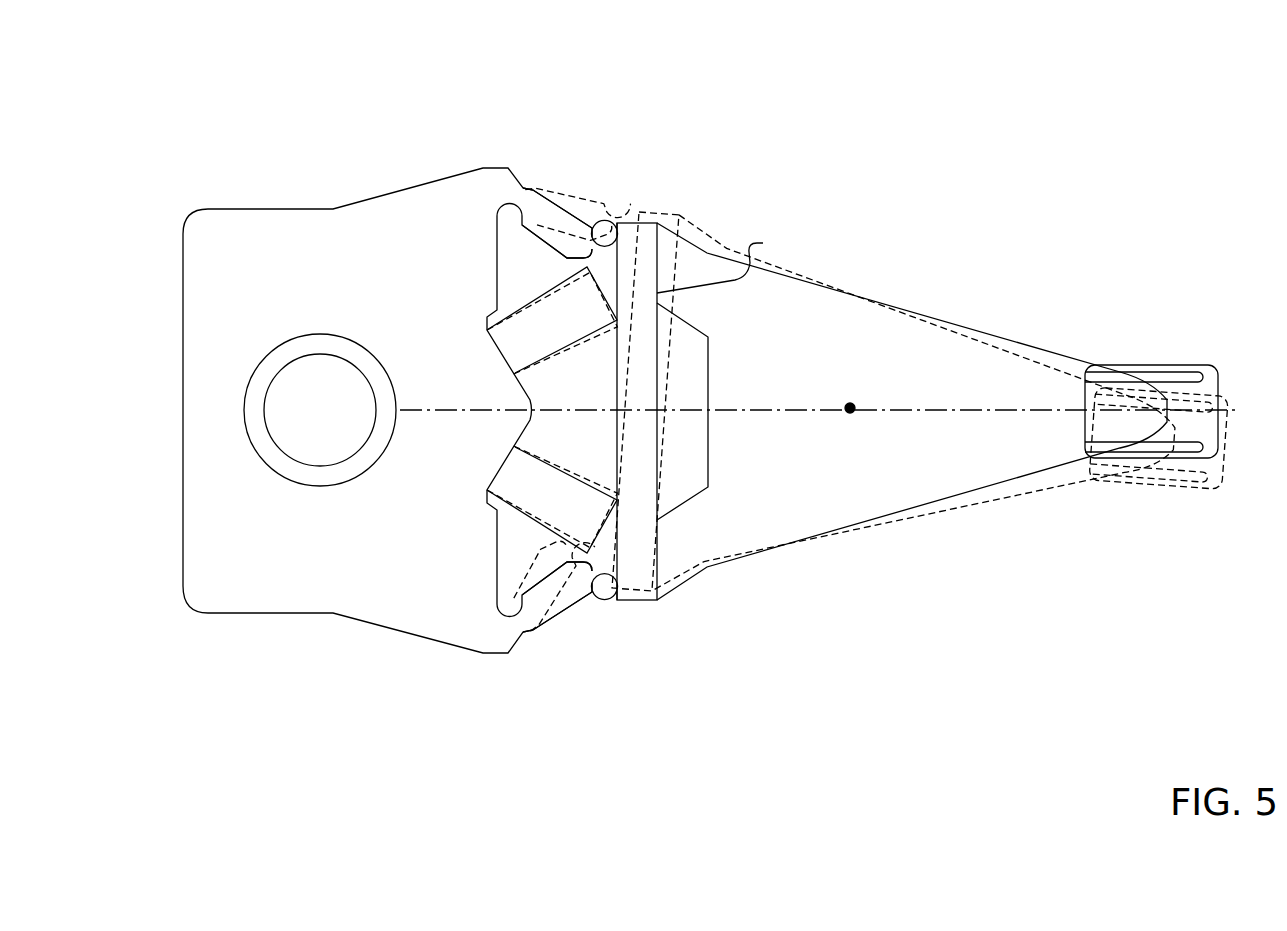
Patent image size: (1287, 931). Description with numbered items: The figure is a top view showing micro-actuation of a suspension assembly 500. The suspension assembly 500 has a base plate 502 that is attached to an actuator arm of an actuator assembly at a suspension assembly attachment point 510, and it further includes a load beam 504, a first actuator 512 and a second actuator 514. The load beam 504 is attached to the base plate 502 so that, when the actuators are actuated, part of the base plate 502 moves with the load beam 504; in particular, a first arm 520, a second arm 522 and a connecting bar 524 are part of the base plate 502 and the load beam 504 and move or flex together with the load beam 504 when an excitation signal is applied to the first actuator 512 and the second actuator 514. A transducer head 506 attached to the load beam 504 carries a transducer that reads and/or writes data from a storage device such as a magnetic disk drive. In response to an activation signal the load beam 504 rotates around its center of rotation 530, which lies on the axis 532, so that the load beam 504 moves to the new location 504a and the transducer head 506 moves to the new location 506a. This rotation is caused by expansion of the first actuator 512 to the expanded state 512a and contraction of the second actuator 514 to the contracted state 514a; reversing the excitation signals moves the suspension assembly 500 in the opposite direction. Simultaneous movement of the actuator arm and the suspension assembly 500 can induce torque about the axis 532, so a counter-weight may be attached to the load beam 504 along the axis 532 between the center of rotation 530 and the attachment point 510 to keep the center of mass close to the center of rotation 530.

The suspension assembly 500 is at (258, 91).
The base plate 502 is at (387, 627).
The load beam 504 is at (963, 492).
The load beam in new location 504a is at (1030, 493).
The transducer head 506 is at (1150, 365).
The transducer head in new location 506a is at (1167, 495).
The suspension assembly attachment point 510 is at (305, 490).
The first actuator 512 is at (573, 280).
The expanded first actuator 512a is at (620, 300).
The second actuator 514 is at (563, 540).
The contracted second actuator 514a is at (497, 520).
The first arm 520 is at (548, 203).
The second arm 522 is at (587, 607).
The connecting bar 524 is at (730, 264).
The center of rotation 530 is at (850, 408).
The axis 532 is at (970, 410).